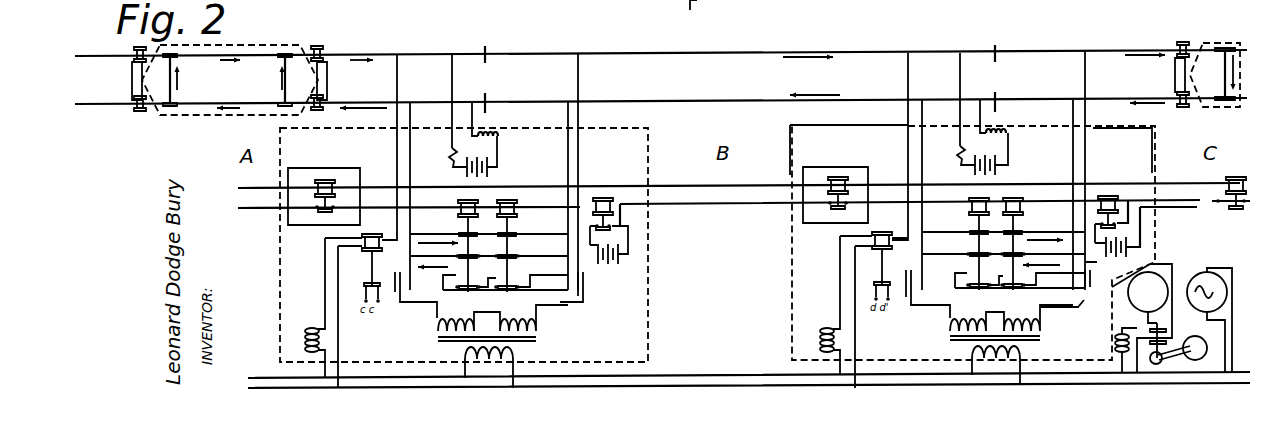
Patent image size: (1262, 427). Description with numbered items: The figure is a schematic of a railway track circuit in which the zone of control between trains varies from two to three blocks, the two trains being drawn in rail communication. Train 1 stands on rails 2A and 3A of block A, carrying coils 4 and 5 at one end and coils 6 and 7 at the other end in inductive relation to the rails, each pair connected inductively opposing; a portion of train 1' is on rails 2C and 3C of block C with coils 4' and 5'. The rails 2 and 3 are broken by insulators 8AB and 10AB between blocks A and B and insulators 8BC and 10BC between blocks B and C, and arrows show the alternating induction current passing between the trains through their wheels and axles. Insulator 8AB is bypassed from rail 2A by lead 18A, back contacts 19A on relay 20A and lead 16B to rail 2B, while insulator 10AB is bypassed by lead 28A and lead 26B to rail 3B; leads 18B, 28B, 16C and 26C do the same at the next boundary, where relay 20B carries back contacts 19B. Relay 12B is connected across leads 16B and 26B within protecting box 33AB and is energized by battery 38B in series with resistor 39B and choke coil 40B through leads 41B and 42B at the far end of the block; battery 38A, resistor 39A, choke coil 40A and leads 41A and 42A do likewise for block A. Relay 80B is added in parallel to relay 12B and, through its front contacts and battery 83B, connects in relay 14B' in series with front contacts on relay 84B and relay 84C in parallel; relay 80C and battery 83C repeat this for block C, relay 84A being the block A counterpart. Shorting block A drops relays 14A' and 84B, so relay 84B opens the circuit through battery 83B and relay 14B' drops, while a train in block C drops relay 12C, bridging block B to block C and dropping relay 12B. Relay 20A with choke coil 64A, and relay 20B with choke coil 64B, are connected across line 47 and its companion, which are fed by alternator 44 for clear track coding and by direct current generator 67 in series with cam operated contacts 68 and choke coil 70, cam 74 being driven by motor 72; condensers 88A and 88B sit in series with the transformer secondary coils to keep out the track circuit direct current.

The train 1 is at (229, 69).
The train 1' is at (1208, 65).
The rail 2 is at (92, 56).
The rail 3 is at (92, 107).
The coil 4 is at (125, 57).
The coil 5 is at (129, 114).
The coil 6 is at (325, 50).
The coil 7 is at (323, 108).
The coil 4' is at (1184, 39).
The coil 5' is at (1180, 111).
The rail 2A is at (392, 44).
The rail 3A is at (357, 94).
The rail 2B is at (781, 43).
The rail 3B is at (767, 94).
The rail 2C is at (1121, 41).
The rail 3C is at (1114, 89).
The rail insulator 8AB is at (487, 36).
The rail insulator 10AB is at (488, 87).
The rail insulator 8BC is at (1006, 36).
The rail insulator 10BC is at (997, 87).
The lead 18A is at (396, 138).
The lead 28A is at (409, 146).
The lead 18B is at (908, 116).
The lead 28B is at (921, 131).
The lead 16B is at (580, 108).
The lead 26B is at (569, 136).
The lead 16C is at (1087, 108).
The lead 26C is at (1076, 131).
The lead 41A is at (453, 118).
The lead 42A is at (475, 120).
The choke coil 40A is at (499, 135).
The current limiting resistor 39A is at (453, 162).
The battery 38A is at (498, 168).
The lead 41B is at (961, 117).
The lead 42B is at (983, 114).
The choke coil 40B is at (1009, 133).
The current limiting resistor 39B is at (960, 160).
The battery 38B is at (1008, 166).
The relay 84A is at (326, 179).
The relay 84B is at (838, 176).
The relay 84C is at (1224, 178).
The relay 80B is at (601, 196).
The relay 80C is at (1107, 194).
The battery 83B is at (608, 262).
The battery 83C is at (1098, 252).
The relay 14A' is at (450, 246).
The track circuit relay 12B is at (514, 215).
The relay 14B' is at (963, 244).
The track circuit relay 12C is at (1021, 214).
The relay 20A is at (386, 226).
The back contacts 19A is at (362, 253).
The relay 20B is at (898, 227).
The back contacts 19B is at (876, 249).
The choke coil 64A is at (316, 327).
The choke coil 64B is at (833, 330).
The condenser 88A is at (396, 296).
The condenser 88B is at (585, 286).
The protecting box 33AB is at (445, 245).
The direct current generator 67 is at (1152, 269).
The alternator 44 is at (1205, 269).
The cam operated contacts 68 is at (1141, 331).
The choke coil 70 is at (1140, 345).
The motor 72 is at (1195, 339).
The cam 74 is at (1163, 361).
The line 47 is at (704, 9).